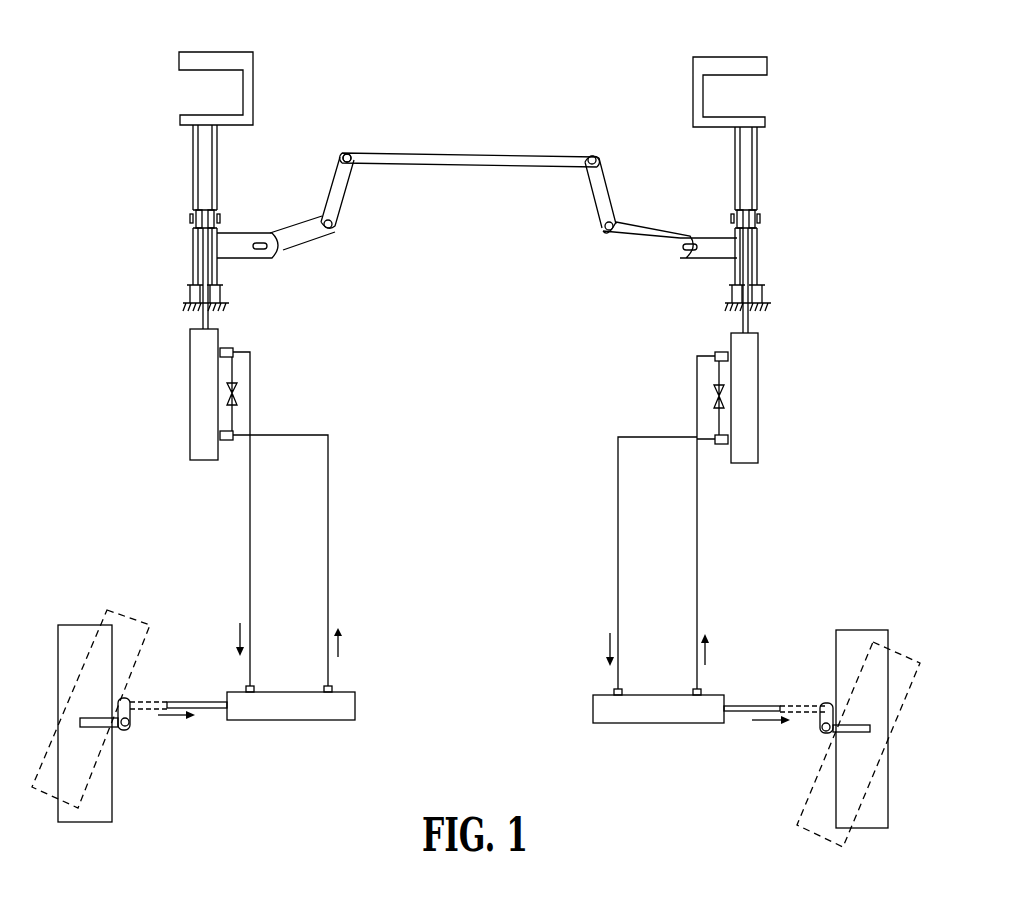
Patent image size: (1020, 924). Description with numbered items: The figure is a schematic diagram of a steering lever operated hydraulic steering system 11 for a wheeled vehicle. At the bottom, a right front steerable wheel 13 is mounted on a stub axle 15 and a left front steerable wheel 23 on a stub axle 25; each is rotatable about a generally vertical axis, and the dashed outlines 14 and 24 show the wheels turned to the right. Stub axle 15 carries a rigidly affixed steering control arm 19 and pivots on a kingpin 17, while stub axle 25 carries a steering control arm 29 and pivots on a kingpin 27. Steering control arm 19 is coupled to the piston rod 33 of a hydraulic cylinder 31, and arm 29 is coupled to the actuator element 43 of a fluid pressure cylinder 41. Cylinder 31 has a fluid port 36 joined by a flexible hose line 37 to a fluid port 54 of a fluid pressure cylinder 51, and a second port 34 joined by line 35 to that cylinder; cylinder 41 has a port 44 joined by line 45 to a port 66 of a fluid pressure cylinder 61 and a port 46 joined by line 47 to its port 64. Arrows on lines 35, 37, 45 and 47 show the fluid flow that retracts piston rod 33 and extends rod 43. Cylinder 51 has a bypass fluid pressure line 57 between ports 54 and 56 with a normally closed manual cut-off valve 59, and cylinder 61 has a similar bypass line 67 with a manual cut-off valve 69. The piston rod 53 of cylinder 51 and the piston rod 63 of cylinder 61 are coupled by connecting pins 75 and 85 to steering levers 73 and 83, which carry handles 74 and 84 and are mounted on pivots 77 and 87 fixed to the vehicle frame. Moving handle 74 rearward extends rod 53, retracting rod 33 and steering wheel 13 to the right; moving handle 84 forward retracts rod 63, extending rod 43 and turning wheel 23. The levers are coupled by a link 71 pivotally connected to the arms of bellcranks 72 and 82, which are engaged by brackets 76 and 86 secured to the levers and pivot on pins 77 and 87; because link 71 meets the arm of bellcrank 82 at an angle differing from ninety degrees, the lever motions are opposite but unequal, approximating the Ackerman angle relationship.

The steering system 11 is at (437, 449).
The right front steerable wheel 13 is at (112, 806).
The dashed outline of turned wheel 14 is at (150, 622).
The stub axle 15 is at (82, 720).
The kingpin 17 is at (130, 730).
The steering control arm 19 is at (130, 700).
The left front steerable wheel 23 is at (836, 640).
The dashed outline of turned wheel 24 is at (797, 810).
The stub axle 25 is at (868, 732).
The kingpin 27 is at (822, 732).
The steering control arm 29 is at (824, 703).
The hydraulic cylinder 31 is at (270, 720).
The piston rod 33 is at (200, 702).
The fluid port 34 is at (333, 688).
The fluid pressure line 35 is at (328, 500).
The fluid port 36 is at (255, 688).
The fluid pressure line 37 is at (250, 482).
The fluid pressure cylinder 41 is at (640, 723).
The actuator element 43 is at (762, 706).
The fluid pressure port 44 is at (616, 692).
The fluid pressure line 45 is at (618, 512).
The port 46 is at (695, 690).
The fluid pressure line 47 is at (697, 487).
The fluid pressure cylinder 51 is at (190, 376).
The piston rod 53 is at (200, 270).
The fluid port 54 is at (233, 350).
The port 56 is at (233, 442).
The bypass fluid pressure line 57 is at (234, 420).
The manual cut-off valve 59 is at (237, 393).
The fluid pressure cylinder 61 is at (758, 378).
The piston rod 63 is at (752, 266).
The port 64 is at (715, 352).
The port 66 is at (718, 445).
The bypass line 67 is at (712, 422).
The manual cut-off valve 69 is at (714, 395).
The link 71 is at (452, 153).
The bellcrank 72 is at (348, 196).
The steering lever 73 is at (193, 148).
The handle 74 is at (205, 52).
The connecting pin 75 is at (190, 219).
The bracket 76 is at (255, 260).
The pivot pin 77 is at (336, 225).
The bellcrank 82 is at (616, 196).
The steering lever 83 is at (757, 166).
The handle 84 is at (748, 57).
The connecting pin 85 is at (760, 220).
The bracket 86 is at (700, 260).
The pivot pin 87 is at (604, 226).